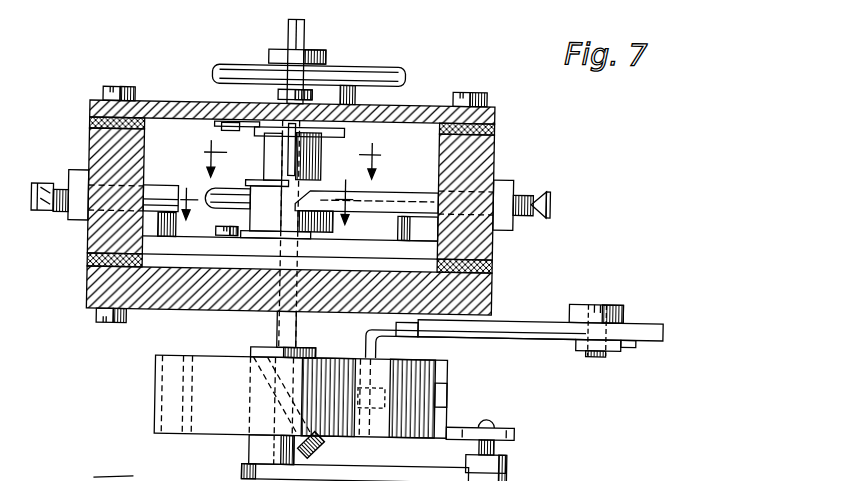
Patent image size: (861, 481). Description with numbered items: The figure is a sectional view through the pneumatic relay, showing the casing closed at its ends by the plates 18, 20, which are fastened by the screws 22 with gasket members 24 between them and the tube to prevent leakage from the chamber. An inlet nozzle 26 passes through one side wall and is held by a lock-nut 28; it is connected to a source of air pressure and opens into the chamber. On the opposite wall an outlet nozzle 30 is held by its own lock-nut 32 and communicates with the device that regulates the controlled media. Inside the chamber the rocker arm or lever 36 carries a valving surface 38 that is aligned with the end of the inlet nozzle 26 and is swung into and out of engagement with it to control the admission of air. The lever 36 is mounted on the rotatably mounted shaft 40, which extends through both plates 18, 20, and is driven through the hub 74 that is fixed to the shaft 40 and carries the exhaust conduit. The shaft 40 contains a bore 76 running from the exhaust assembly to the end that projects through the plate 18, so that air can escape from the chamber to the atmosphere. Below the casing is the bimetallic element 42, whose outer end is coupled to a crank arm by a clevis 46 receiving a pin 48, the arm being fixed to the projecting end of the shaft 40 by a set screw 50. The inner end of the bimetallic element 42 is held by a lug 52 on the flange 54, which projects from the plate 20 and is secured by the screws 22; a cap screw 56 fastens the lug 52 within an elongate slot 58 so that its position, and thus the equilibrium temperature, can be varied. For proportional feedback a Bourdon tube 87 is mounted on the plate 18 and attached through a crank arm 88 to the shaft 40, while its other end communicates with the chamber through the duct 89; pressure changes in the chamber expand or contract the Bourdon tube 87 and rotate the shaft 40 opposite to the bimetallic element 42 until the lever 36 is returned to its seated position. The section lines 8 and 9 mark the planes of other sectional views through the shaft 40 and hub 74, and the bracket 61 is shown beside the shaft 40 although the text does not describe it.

The plate 18 is at (222, 65).
The plate 20 is at (90, 285).
The screws 22 is at (99, 315).
The gasket members 24 is at (90, 116).
The inlet nozzle 26 is at (544, 208).
The lock-nut 28 is at (506, 181).
The outlet nozzle 30 is at (58, 210).
The lock-nut 32 is at (52, 184).
The rocker arm or lever 36 is at (348, 130).
The valving surface 38 is at (293, 166).
The rotatably mounted shaft 40 is at (304, 21).
The bimetallic element 42 is at (204, 424).
The clevis 46 is at (521, 421).
The pin 48 is at (506, 440).
The set screw 50 is at (330, 441).
The lug 52 is at (370, 342).
The flange 54 is at (666, 313).
The cap screw 56 is at (630, 338).
The elongate slot 58 is at (578, 312).
The bracket 61 is at (297, 156).
The hub 74 is at (252, 185).
The bore 76 is at (287, 38).
The Bourdon tube 87 is at (400, 65).
The crank arm 88 is at (326, 52).
The duct 89 is at (356, 93).
The section line 8- 8 is at (275, 195).
The section line 9- 9 is at (294, 160).